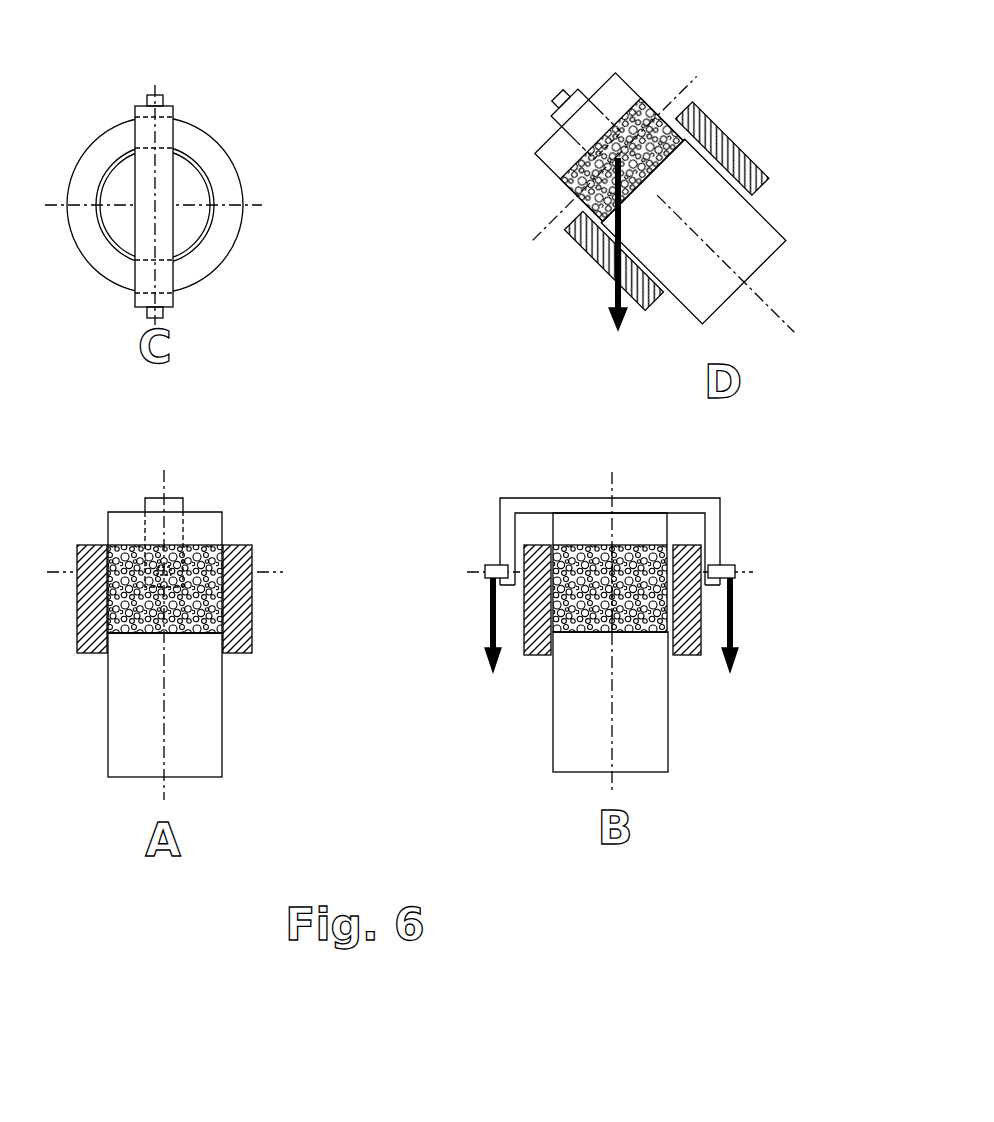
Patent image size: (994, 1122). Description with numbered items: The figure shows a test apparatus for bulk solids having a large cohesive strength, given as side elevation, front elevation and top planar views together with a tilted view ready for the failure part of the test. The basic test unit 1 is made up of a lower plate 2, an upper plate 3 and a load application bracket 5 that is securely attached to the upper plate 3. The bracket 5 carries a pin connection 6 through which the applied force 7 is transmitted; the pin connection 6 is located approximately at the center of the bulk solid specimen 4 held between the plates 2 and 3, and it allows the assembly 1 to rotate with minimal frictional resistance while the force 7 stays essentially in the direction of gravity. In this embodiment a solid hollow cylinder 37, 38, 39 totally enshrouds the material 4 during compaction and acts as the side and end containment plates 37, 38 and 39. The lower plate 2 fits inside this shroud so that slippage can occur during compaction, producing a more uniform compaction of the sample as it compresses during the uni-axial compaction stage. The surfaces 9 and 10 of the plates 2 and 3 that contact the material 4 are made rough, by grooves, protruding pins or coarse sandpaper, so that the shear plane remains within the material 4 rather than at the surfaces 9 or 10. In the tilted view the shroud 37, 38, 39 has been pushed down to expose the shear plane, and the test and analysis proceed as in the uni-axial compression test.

In FIG. 6C, the test unit 1 is at (204, 185).
In FIG. 6D, the test unit 1 is at (713, 208).
In FIG. 6A, the test unit 1 is at (225, 620).
In FIG. 6B, the test unit 1 is at (662, 608).
In FIG. 6D, the lower plate 2 is at (670, 220).
In FIG. 6A, the lower plate 2 is at (145, 662).
In FIG. 6B, the lower plate 2 is at (587, 645).
In FIG. 6C, the upper plate 3 is at (130, 190).
In FIG. 6D, the upper plate 3 is at (558, 150).
In FIG. 6A, the upper plate 3 is at (130, 528).
In FIG. 6B, the upper plate 3 is at (595, 537).
In FIG. 6D, the bulk solid specimen 4 is at (645, 100).
In FIG. 6A, the bulk solid specimen 4 is at (210, 557).
In FIG. 6B, the bulk solid specimen 4 is at (647, 558).
In FIG. 6C, the load application bracket 5 is at (145, 135).
In FIG. 6D, the load application bracket 5 is at (576, 95).
In FIG. 6A, the load application bracket 5 is at (173, 508).
In FIG. 6B, the load application bracket 5 is at (533, 508).
In FIG. 6C, the pin connection 6 is at (157, 100).
In FIG. 6D, the pin connection 6 is at (628, 100).
In FIG. 6A, the pin connection 6 is at (165, 567).
In FIG. 6B, the pin connection 6 is at (497, 572).
In FIG. 6D, the applied force 7 is at (612, 310).
In FIG. 6B, the applied force 7 is at (492, 632).
In FIG. 6B, the surface of upper plate 9 is at (632, 542).
In FIG. 6D, the surface of lower plate 10 is at (655, 173).
In FIG. 6A, the surface of lower plate 10 is at (190, 637).
In FIG. 6B, the surface of lower plate 10 is at (618, 635).
In FIG. 6C, the side containment plate 37 is at (217, 192).
In FIG. 6D, the side containment plate 37 is at (751, 155).
In FIG. 6A, the side containment plate 37 is at (247, 631).
In FIG. 6B, the side containment plate 37 is at (708, 626).
In FIG. 6C, the side containment plate 38 is at (217, 192).
In FIG. 6D, the side containment plate 38 is at (751, 155).
In FIG. 6A, the side containment plate 38 is at (247, 631).
In FIG. 6B, the side containment plate 38 is at (708, 626).
In FIG. 6C, the end containment plate 39 is at (257, 122).
In FIG. 6D, the end containment plate 39 is at (727, 110).
In FIG. 6A, the end containment plate 39 is at (250, 610).
In FIG. 6B, the end containment plate 39 is at (688, 615).